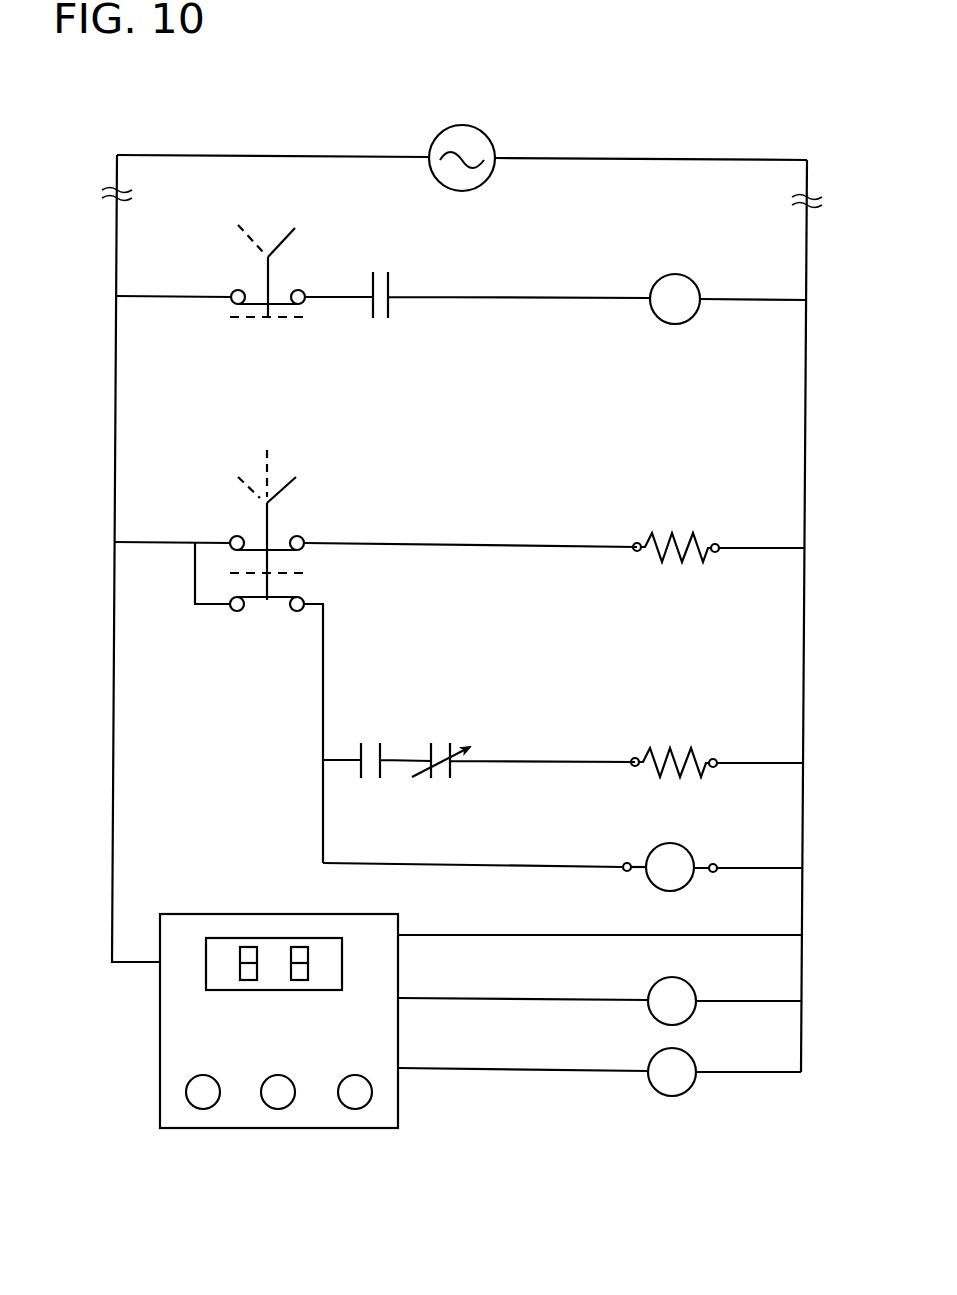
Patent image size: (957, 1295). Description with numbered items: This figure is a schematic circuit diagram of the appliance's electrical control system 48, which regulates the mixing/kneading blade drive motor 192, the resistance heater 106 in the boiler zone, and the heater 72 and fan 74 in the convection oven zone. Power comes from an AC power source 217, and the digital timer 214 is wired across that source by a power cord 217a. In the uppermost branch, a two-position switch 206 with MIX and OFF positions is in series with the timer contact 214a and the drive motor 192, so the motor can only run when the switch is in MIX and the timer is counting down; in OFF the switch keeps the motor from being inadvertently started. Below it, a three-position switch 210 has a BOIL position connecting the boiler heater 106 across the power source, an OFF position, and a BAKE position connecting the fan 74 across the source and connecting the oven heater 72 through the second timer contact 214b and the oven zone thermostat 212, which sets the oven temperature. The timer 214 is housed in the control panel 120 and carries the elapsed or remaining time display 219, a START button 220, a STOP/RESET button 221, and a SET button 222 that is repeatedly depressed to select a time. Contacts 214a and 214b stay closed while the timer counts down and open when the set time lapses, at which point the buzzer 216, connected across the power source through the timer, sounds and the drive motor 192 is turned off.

The control system 48 is at (828, 292).
The heater 72 is at (692, 752).
The fan 74 is at (646, 857).
The resistance heater 106 is at (662, 538).
The control panel 120 is at (413, 1042).
The mixing/kneading blade drive motor 192 is at (650, 290).
The two-position switch 206 is at (252, 285).
The three-position switch 210 is at (250, 530).
The oven zone thermostat 212 is at (470, 746).
The digital timer 214 is at (648, 1062).
The contact 214a is at (381, 319).
The second contact 214b is at (372, 742).
The buzzer 216 is at (648, 992).
The AC power source 217 is at (435, 140).
The power cord 217a is at (331, 160).
The time display 219 is at (301, 939).
The START button 220 is at (202, 1110).
The STOP/RESET button 221 is at (276, 1110).
The SET button 222 is at (356, 1110).